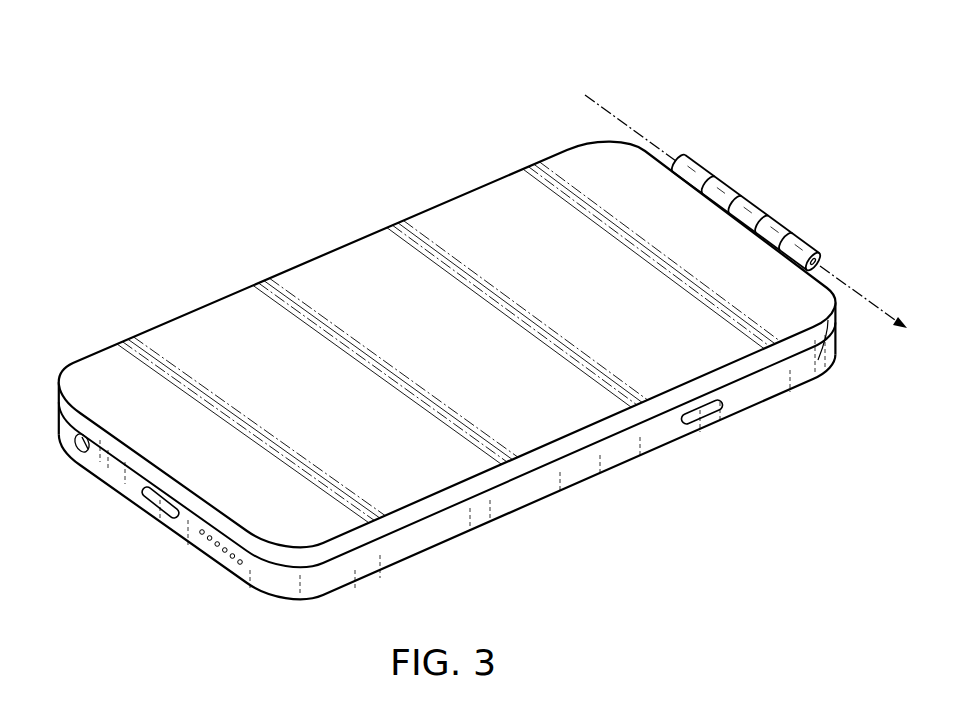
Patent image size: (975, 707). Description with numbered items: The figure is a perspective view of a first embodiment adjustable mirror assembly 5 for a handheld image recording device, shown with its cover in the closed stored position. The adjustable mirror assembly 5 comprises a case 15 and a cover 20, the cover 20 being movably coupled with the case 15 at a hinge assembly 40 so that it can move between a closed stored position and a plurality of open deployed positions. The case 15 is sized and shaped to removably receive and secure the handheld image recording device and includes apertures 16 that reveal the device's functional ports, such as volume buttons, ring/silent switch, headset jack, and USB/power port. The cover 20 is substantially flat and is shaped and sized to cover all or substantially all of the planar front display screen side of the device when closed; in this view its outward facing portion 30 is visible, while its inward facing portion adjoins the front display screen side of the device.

The adjustable mirror assembly 5 is at (235, 78).
The case 15 is at (522, 488).
The apertures 16 is at (73, 449).
The cover 20 is at (793, 343).
The outward facing portion 30 is at (365, 275).
The hinge assembly 40 is at (787, 225).